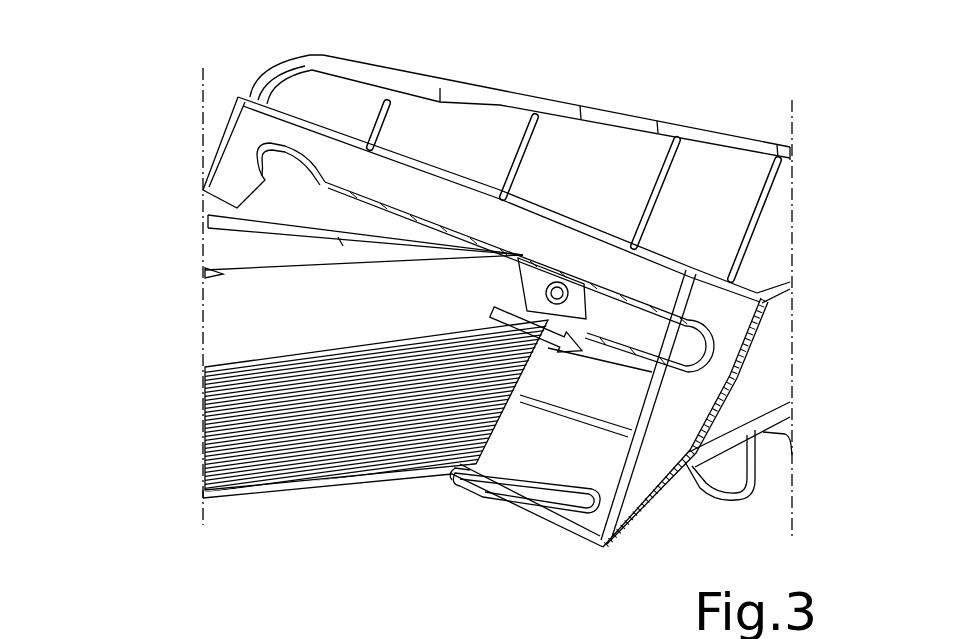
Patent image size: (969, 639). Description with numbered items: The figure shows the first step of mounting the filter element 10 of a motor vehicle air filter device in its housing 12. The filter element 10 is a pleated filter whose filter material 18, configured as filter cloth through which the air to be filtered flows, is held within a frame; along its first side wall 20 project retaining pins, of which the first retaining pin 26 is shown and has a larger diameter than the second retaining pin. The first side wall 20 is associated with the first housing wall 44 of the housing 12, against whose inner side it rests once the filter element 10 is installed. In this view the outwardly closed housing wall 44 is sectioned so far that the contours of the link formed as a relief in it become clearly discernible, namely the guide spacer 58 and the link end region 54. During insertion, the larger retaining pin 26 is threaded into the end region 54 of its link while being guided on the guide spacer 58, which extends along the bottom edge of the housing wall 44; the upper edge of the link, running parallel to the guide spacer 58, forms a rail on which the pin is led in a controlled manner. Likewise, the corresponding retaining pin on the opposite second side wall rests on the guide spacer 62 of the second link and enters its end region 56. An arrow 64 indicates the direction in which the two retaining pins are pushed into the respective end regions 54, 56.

The filter element 10 is at (176, 317).
The housing 12 is at (180, 84).
The filter material 18 is at (303, 460).
The first side wall 20 is at (273, 298).
The first retaining pin 26 is at (538, 293).
The first housing wall 44 is at (490, 180).
The end region 54 is at (667, 343).
The end region 56 is at (537, 486).
The guide spacer 58 is at (667, 337).
The guide spacer 62 is at (473, 483).
The arrow 64 is at (488, 306).